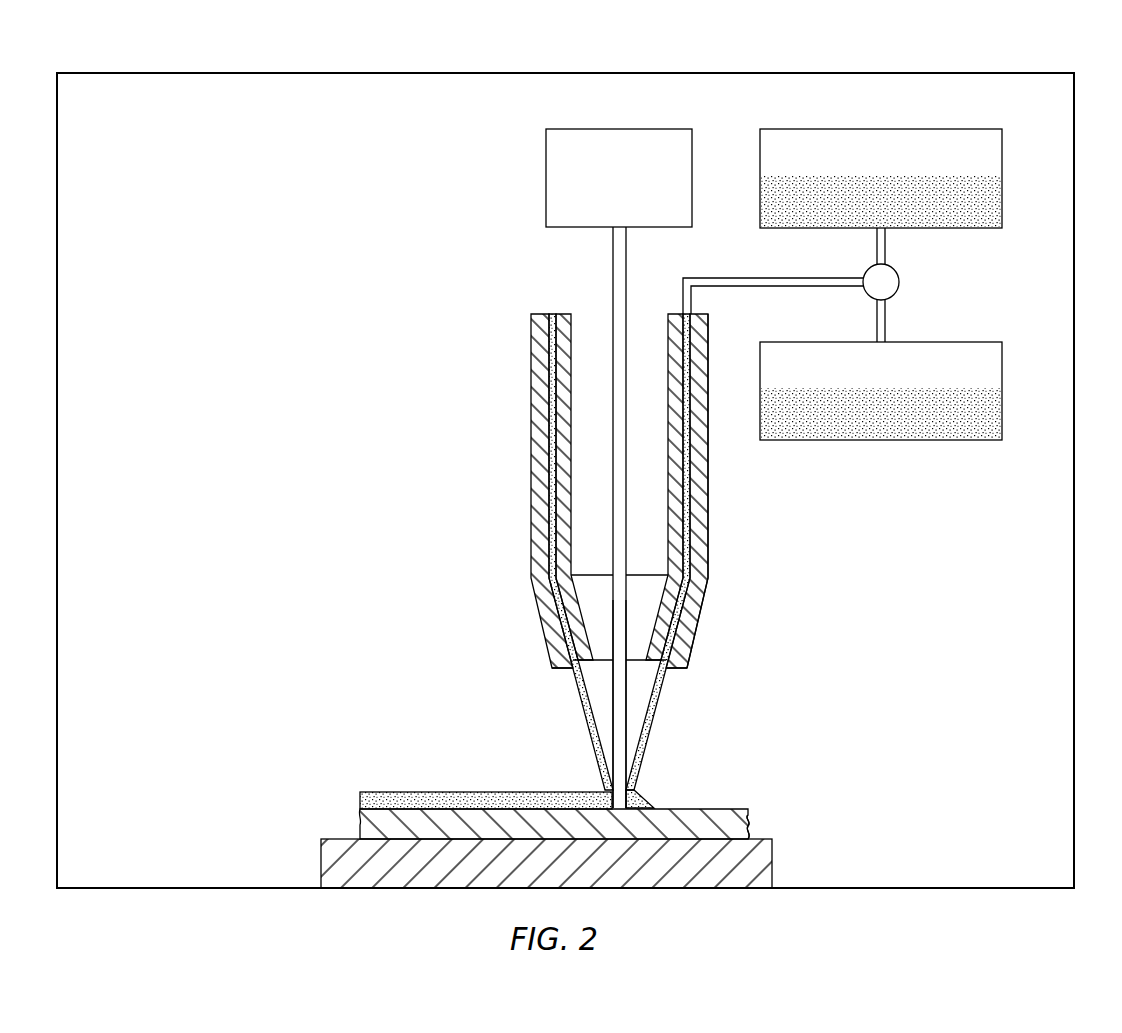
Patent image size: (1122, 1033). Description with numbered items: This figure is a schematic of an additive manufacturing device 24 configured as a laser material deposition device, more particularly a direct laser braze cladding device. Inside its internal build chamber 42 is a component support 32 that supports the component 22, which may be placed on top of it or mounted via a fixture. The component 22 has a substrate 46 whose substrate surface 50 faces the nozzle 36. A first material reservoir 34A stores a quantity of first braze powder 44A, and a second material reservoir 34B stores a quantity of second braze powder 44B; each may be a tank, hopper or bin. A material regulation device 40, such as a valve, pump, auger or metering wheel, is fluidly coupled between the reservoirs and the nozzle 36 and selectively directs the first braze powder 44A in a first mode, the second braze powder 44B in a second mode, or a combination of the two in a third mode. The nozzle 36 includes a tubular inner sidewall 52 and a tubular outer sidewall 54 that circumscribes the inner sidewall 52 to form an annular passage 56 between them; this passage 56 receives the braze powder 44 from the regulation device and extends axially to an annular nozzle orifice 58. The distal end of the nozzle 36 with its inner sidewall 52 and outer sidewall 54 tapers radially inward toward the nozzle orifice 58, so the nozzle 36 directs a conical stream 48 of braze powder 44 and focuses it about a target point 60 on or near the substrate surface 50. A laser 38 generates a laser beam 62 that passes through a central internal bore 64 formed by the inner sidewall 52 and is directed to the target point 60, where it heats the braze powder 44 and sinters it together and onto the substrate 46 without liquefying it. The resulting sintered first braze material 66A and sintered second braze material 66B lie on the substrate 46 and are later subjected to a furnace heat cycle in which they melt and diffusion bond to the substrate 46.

The component 22 is at (539, 779).
The additive manufacturing device 24 is at (1030, 73).
The component support 32 is at (775, 868).
The first material reservoir 34A is at (1003, 155).
The second material reservoir 34B is at (1003, 368).
The nozzle 36 is at (609, 551).
The laser 38 is at (546, 183).
The material regulation device 40 is at (900, 282).
The build chamber 42 is at (333, 508).
The braze powder 44 is at (592, 742).
The first braze powder 44A is at (998, 200).
The second braze powder 44B is at (992, 413).
The substrate 46 is at (751, 830).
The stream 48 is at (633, 552).
The substrate surface 50 is at (747, 806).
The inner sidewall 52 is at (666, 520).
The outer sidewall 54 is at (709, 522).
The passage 56 is at (536, 360).
The nozzle orifice 58 is at (562, 671).
The target point 60 is at (619, 812).
The laser beam 62 is at (612, 709).
The internal bore 64 is at (588, 327).
The sintered first braze material 66A is at (400, 791).
The sintered second braze material 66B is at (486, 800).